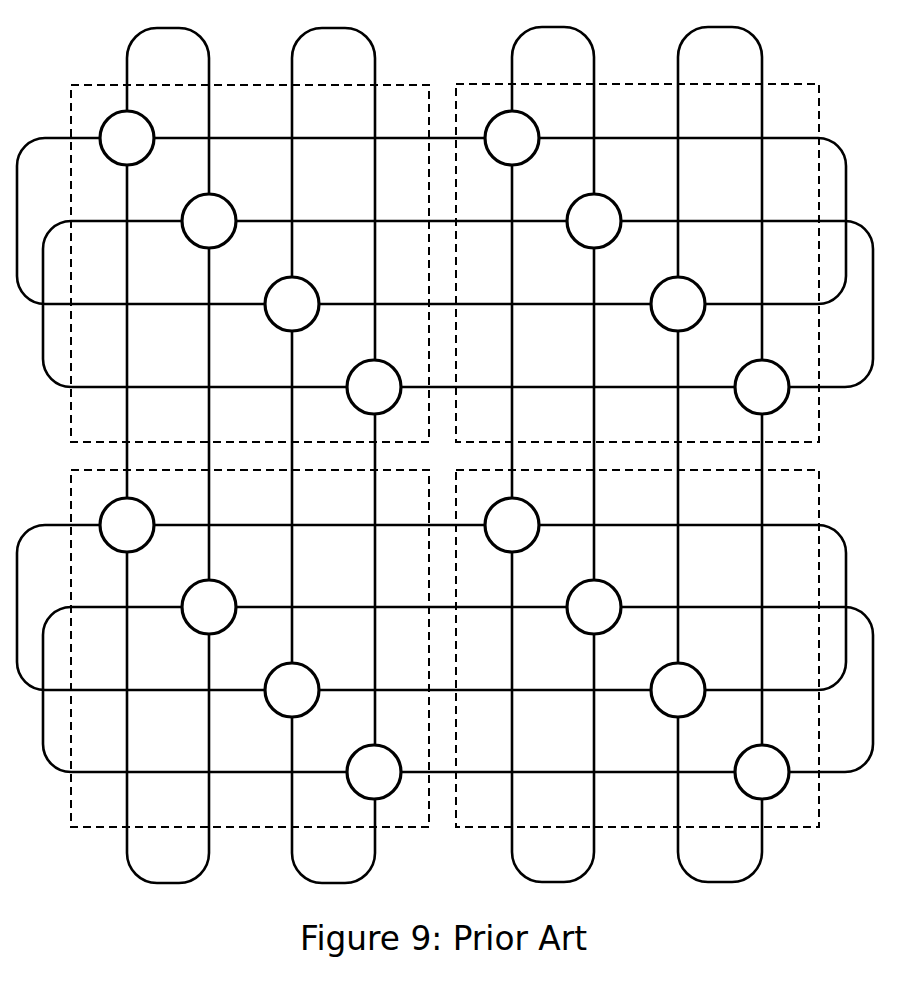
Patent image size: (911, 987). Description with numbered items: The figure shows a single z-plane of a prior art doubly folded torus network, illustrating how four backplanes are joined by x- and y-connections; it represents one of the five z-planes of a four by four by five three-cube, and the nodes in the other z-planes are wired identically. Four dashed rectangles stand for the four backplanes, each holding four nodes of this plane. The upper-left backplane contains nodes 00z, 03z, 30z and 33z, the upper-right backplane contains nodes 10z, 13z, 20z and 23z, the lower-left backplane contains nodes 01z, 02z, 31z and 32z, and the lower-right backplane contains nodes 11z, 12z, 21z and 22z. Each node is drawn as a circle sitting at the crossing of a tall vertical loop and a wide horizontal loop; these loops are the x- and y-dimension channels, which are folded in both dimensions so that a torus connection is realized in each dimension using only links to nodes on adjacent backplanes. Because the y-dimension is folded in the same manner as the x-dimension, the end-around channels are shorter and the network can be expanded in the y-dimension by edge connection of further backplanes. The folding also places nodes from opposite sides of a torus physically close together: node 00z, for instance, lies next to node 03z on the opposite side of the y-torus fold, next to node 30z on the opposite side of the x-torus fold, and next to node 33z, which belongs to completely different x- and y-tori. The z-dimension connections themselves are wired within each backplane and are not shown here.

The node 00z is at (127, 138).
The node 03z is at (209, 221).
The node 30z is at (292, 304).
The node 33z is at (374, 387).
The node 10z is at (512, 138).
The node 13z is at (594, 221).
The node 20z is at (678, 304).
The node 23z is at (762, 387).
The node 01z is at (127, 525).
The node 02z is at (209, 607).
The node 31z is at (292, 690).
The node 32z is at (374, 772).
The node 11z is at (512, 525).
The node 12z is at (594, 607).
The node 21z is at (678, 690).
The node 22z is at (762, 772).